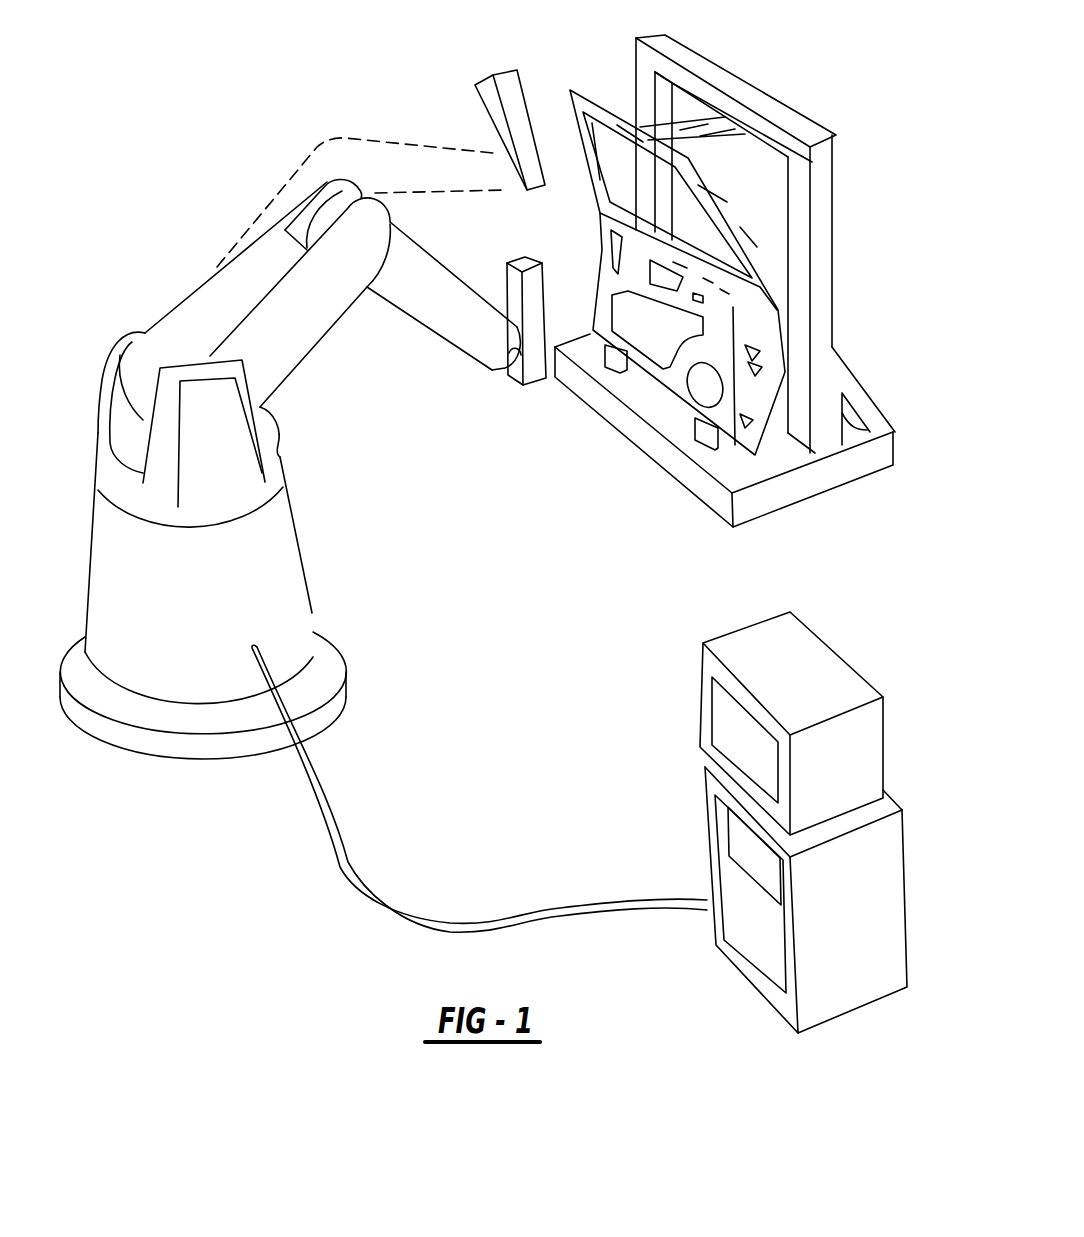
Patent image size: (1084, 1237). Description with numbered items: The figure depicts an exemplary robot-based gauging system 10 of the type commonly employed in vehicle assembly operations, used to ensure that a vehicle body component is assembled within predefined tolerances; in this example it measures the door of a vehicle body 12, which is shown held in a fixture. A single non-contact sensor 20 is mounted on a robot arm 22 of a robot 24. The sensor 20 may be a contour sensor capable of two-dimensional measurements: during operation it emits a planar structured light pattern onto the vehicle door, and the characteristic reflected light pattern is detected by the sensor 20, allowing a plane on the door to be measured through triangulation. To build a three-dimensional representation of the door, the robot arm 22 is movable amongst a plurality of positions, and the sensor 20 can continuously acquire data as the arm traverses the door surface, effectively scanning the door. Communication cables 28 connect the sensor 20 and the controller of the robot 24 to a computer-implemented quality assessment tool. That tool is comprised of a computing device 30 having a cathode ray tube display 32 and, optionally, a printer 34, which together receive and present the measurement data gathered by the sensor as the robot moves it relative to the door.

The robot-based gauging system 10 is at (248, 148).
The vehicle body 12 is at (594, 103).
The non-contact sensor 20 is at (533, 372).
The robot arm 22 is at (307, 333).
The robot 24 is at (277, 558).
The communication cables 28 is at (322, 798).
The computing device 30 is at (786, 923).
The cathode ray tube display 32 is at (815, 672).
The printer 34 is at (753, 937).